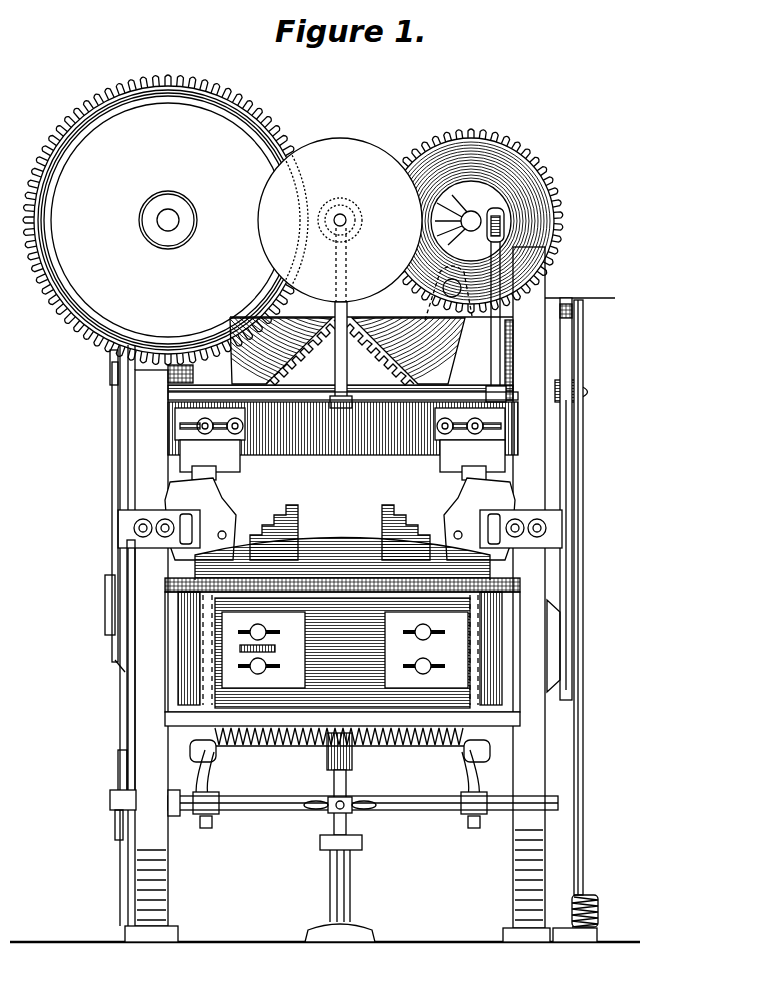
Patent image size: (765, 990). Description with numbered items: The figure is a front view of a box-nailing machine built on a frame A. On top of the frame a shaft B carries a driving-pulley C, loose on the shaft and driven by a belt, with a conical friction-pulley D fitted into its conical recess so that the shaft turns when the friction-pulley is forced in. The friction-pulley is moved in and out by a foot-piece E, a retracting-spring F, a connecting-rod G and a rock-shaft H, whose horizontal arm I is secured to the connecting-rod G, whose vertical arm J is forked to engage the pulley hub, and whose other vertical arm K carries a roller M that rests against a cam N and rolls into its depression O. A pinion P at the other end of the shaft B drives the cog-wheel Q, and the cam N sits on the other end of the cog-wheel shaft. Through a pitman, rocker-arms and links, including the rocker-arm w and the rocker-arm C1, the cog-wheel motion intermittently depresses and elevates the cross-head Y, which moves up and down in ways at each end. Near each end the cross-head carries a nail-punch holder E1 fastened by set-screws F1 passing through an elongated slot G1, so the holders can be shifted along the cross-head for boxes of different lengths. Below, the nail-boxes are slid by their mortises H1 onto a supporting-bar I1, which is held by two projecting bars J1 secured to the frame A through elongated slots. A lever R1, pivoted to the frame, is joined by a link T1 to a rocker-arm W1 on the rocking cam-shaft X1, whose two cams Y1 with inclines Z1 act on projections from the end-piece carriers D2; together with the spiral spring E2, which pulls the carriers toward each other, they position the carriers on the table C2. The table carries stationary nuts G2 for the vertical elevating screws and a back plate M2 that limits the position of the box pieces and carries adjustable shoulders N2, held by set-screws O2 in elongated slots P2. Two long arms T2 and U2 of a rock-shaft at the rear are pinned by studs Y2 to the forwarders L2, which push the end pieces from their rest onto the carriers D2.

The frame A is at (325, 594).
The cog-wheel Q is at (168, 220).
The roller M is at (560, 185).
The cam N is at (469, 232).
The depression O is at (451, 220).
The shaft B is at (225, 220).
The pinion P is at (340, 376).
The driving-pulley C is at (347, 323).
The rock-shaft H is at (340, 357).
The vertical arm J is at (341, 355).
The vertical arm K is at (548, 286).
The horizontal arm I is at (569, 388).
The long arm U2 is at (575, 353).
The projecting bar J1 is at (572, 512).
The connecting-rod G is at (585, 597).
The foot-piece E is at (592, 910).
The retracting-spring F is at (600, 925).
The cross-head Y is at (343, 423).
The elongated slot G1 is at (340, 424).
The set-screw F1 is at (340, 418).
The nail-punch holder E1 is at (342, 465).
The rocker-arm w is at (340, 521).
The supporting-bar I1 is at (340, 529).
The long arm T2 is at (104, 512).
The stud or pin Y2 is at (104, 640).
The forwarder L2 is at (118, 672).
The lever R1 is at (126, 725).
The link T1 is at (117, 778).
The rocker-arm W1 is at (116, 815).
The back plate M2 is at (342, 608).
The shoulder or support N2 is at (345, 650).
The set-screw O2 is at (341, 652).
The elongated slot P2 is at (385, 632).
The friction-pulley D is at (204, 703).
The end-piece carrier D2 is at (479, 705).
The table C2 is at (342, 713).
The spiral spring E2 is at (340, 746).
The stationary nut G2 is at (337, 784).
The incline Z1 is at (347, 761).
The cam Y1 is at (340, 789).
The rocking cam-shaft X1 is at (363, 799).
The mortise H1 is at (340, 856).
The rocker-arm C1 is at (340, 813).